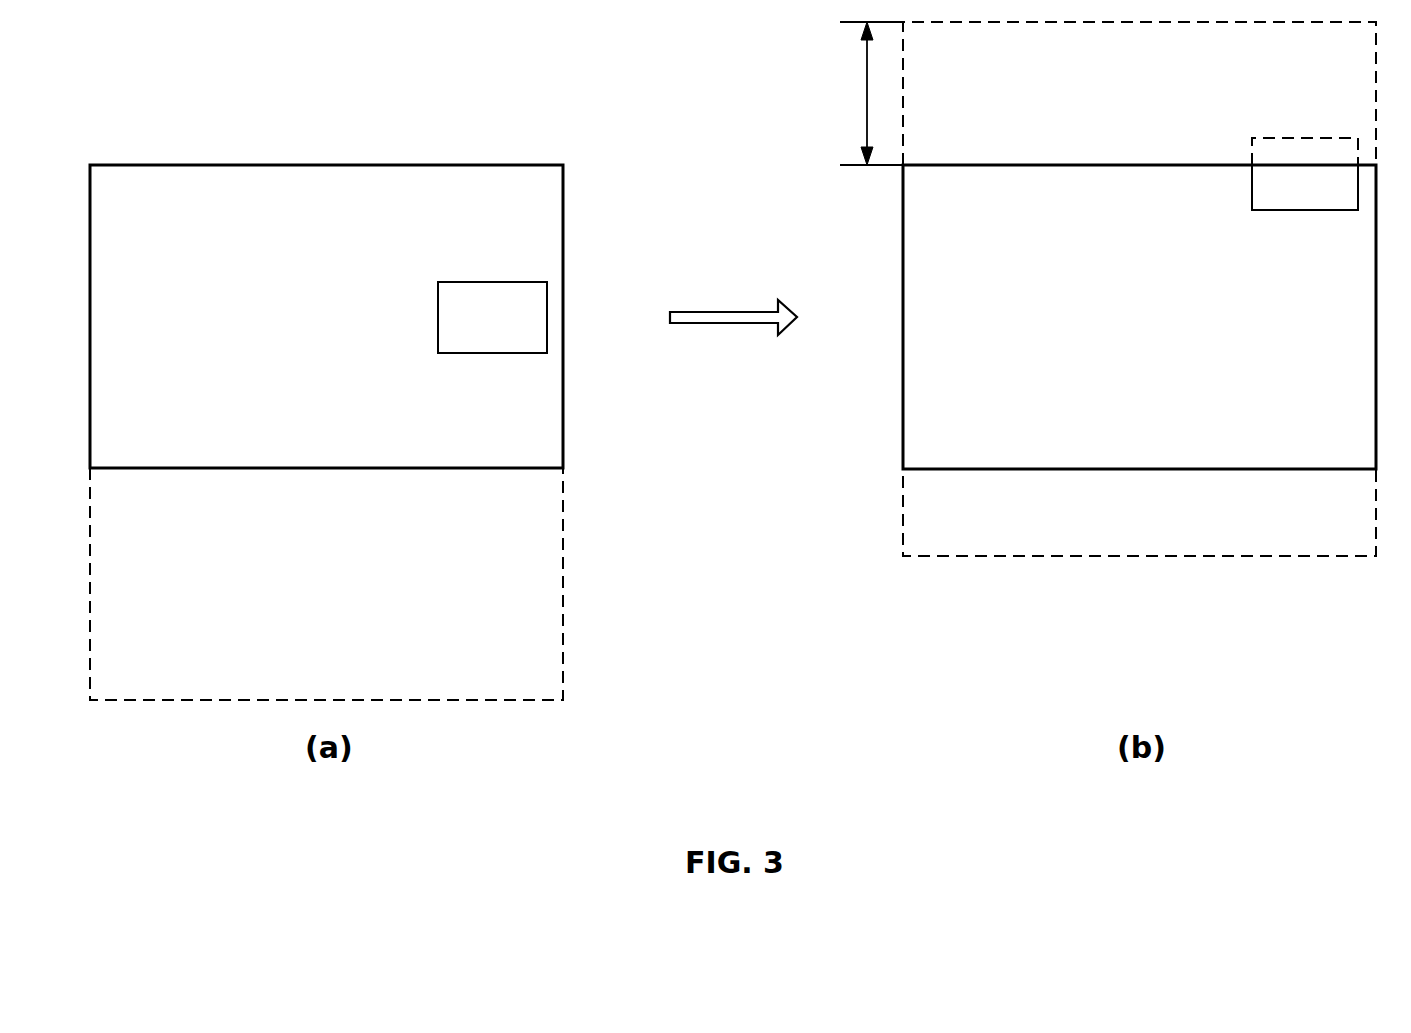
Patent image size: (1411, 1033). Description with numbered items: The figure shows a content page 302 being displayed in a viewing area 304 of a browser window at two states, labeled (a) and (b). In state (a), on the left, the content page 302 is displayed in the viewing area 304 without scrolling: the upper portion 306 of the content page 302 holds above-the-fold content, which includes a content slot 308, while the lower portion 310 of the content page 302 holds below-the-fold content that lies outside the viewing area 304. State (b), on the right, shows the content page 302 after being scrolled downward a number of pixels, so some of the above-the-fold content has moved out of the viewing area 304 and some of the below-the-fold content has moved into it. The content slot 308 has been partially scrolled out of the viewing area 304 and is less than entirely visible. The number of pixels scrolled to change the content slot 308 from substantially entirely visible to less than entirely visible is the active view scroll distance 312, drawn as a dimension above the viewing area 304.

The content page 302 is at (565, 525).
The viewing area 304 is at (565, 348).
The portion 306 is at (137, 195).
The content slot 308 is at (898, 245).
The portion 310 is at (137, 496).
The active view scroll distance 312 is at (858, 99).